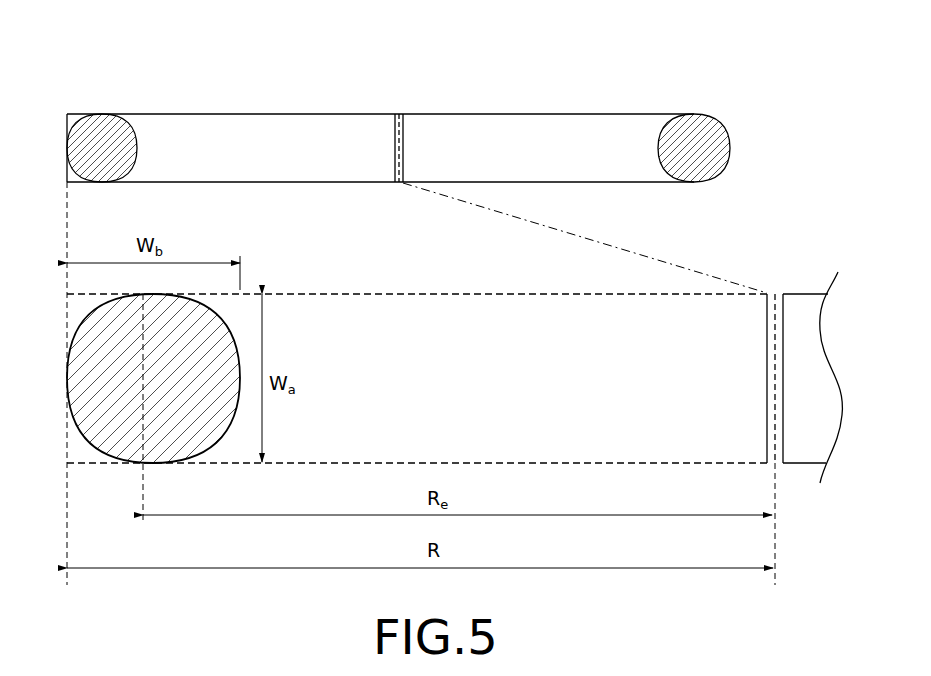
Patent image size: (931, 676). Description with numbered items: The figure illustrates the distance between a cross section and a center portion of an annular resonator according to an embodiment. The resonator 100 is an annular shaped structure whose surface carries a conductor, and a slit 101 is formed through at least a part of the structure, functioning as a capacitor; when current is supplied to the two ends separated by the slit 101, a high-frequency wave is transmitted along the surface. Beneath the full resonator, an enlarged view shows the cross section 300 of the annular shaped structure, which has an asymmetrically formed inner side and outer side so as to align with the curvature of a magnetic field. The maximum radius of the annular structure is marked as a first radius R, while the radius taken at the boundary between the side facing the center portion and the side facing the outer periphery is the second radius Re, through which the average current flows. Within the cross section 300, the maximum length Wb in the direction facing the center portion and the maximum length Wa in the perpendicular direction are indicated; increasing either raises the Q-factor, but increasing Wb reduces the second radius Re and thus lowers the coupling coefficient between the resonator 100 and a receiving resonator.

The resonator 100 is at (557, 113).
The slit 101 is at (403, 140).
The cross section 300 is at (100, 130).